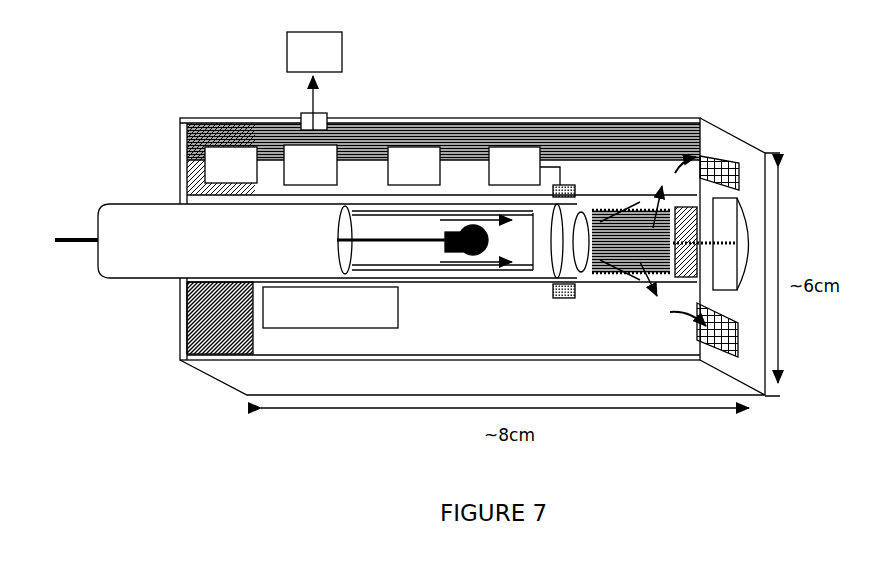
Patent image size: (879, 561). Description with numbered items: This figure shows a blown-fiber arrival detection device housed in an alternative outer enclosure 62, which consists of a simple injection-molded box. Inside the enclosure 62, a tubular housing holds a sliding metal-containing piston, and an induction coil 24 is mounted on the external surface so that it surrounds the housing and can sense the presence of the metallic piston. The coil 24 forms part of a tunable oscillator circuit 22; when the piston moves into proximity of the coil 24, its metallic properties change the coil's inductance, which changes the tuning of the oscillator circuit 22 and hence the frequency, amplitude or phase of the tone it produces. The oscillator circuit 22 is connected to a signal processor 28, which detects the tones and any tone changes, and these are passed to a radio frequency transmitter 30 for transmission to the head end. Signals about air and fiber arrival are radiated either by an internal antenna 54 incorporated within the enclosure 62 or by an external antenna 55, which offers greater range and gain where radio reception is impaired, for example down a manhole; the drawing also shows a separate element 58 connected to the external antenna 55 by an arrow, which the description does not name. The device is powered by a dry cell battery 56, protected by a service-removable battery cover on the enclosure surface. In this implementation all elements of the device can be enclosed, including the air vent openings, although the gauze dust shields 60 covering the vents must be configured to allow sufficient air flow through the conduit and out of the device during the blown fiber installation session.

The tunable oscillator circuit 22 is at (514, 166).
The induction coil 24 is at (577, 193).
The signal processor 28 is at (414, 166).
The radio frequency transmitter 30 is at (310, 165).
The internal antenna 54 is at (231, 165).
The external antenna 55 is at (328, 114).
The dry cell battery 56 is at (330, 307).
The external display device 58 is at (314, 52).
The gauze dust shields 60 is at (741, 160).
The outer enclosure 62 is at (497, 119).